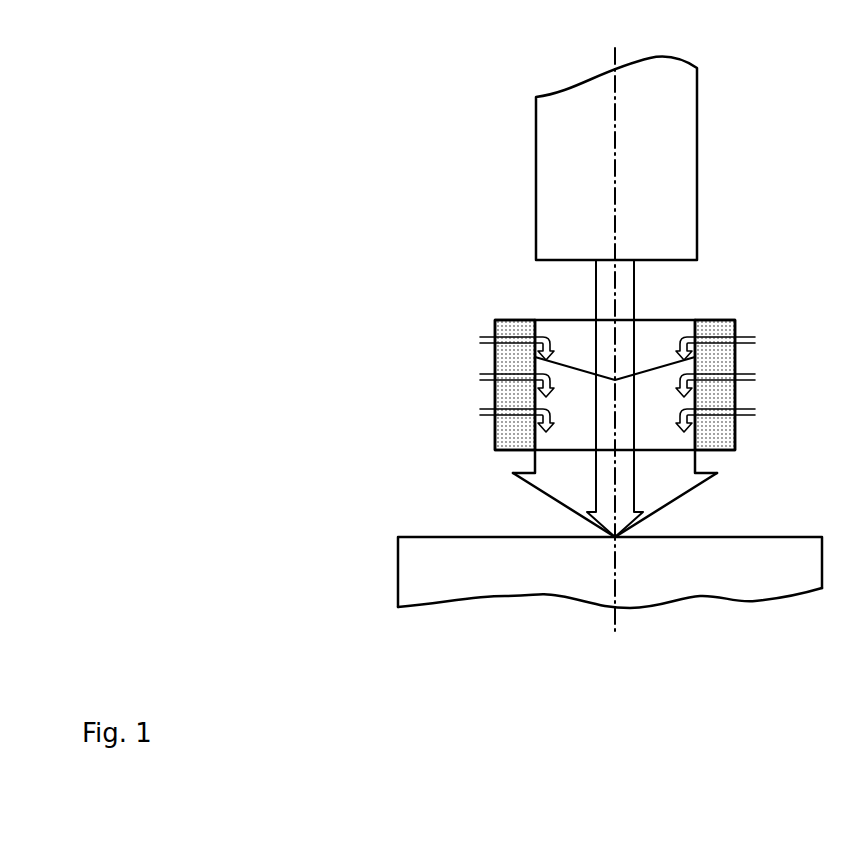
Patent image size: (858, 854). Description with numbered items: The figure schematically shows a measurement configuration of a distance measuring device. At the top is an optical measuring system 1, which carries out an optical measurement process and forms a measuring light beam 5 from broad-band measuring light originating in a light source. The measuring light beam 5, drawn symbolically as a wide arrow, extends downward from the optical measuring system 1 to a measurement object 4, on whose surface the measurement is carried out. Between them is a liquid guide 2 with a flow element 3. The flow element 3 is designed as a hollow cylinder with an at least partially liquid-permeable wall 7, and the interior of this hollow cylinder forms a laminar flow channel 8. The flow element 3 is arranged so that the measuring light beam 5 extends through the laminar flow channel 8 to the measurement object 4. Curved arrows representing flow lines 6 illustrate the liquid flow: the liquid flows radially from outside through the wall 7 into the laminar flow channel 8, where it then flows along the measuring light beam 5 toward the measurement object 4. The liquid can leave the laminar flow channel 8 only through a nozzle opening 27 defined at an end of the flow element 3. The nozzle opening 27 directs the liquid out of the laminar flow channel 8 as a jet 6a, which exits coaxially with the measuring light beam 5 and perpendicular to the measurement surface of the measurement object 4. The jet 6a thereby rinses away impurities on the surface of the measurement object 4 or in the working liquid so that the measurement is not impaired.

The optical measuring system 1 is at (392, 204).
The liquid guide 2 is at (403, 362).
The flow element 3 is at (460, 437).
The measurement object 4 is at (420, 575).
The measuring light beam 5 is at (605, 483).
The flow lines 6 is at (747, 417).
The jet of liquid 6a is at (540, 487).
The liquid-permeable wall 7 is at (715, 313).
The laminar flow channel 8 is at (667, 487).
The nozzle opening 27 is at (682, 451).